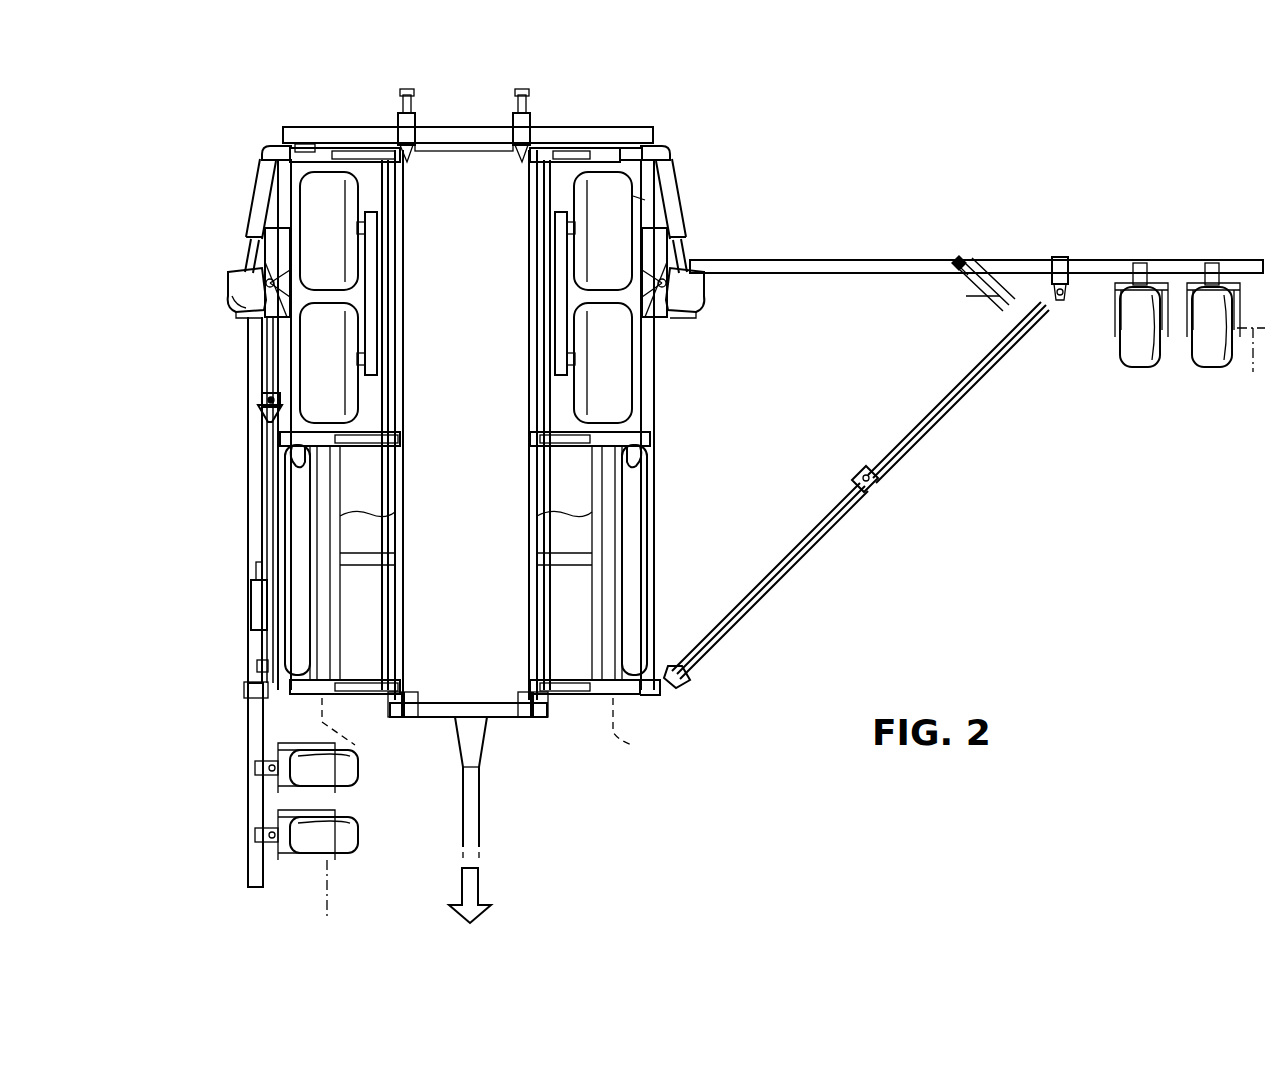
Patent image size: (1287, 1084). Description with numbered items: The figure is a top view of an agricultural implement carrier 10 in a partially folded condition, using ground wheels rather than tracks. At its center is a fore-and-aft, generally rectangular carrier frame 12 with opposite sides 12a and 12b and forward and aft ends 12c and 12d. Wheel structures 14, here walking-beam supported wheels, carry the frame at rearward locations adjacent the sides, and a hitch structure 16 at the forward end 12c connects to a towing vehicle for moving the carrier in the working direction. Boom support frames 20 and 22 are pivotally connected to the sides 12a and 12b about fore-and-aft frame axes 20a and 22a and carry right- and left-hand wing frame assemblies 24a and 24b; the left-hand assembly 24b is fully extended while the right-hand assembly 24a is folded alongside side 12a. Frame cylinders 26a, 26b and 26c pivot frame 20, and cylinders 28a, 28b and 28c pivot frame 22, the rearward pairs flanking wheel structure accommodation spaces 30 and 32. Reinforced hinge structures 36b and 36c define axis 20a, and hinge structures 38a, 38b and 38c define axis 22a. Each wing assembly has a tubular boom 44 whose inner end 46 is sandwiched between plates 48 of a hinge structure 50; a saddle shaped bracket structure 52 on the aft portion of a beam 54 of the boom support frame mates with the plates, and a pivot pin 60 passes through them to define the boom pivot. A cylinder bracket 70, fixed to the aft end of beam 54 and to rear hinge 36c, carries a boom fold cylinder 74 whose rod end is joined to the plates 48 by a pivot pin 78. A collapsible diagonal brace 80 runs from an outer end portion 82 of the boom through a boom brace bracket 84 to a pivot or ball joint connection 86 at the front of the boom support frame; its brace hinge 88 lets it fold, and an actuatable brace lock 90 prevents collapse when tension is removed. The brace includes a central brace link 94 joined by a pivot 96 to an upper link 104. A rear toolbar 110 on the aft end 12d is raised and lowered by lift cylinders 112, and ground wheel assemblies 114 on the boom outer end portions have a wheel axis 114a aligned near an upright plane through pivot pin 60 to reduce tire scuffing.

The agricultural implement carrier 10 is at (172, 160).
The central carrier frame 12 is at (466, 454).
The carrier frame side 12a is at (350, 513).
The carrier frame side 12b is at (560, 513).
The forward end of carrier frame 12c is at (470, 703).
The aft end of carrier frame 12d is at (465, 152).
The wheel structures 14 is at (368, 397).
The hitch structure 16 is at (492, 755).
The boom support frame 20 is at (411, 425).
The frame axis 20a is at (370, 728).
The boom support frame 22 is at (655, 373).
The frame axis 22a is at (645, 730).
The right-hand wing frame assembly 24a is at (218, 655).
The left-hand wing frame assembly 24b is at (877, 240).
The frame cylinder 26a is at (388, 680).
The frame cylinder 26b is at (383, 448).
The frame cylinder 26c is at (378, 162).
The frame cylinder 28a is at (556, 680).
The frame cylinder 28b is at (565, 446).
The frame cylinder 28c is at (557, 162).
The wheel structure accommodation space 30 is at (300, 126).
The wheel structure accommodation space 32 is at (557, 197).
The reinforced hinge structure 36b is at (298, 458).
The reinforced hinge structure 36c is at (310, 146).
The hinge structure 38a is at (630, 695).
The hinge structure 38b is at (640, 434).
The hinge structure 38c is at (628, 146).
The boom 44 is at (258, 410).
The inner end of boom 46 is at (246, 318).
The plates 48 is at (228, 284).
The hinge structure 50 is at (224, 268).
The saddle shaped bracket structure 52 is at (282, 248).
The fore-and-aft extending beam 54 is at (640, 200).
The pivot pin 60 is at (275, 282).
The cylinder bracket 70 is at (266, 147).
The boom fold cylinder 74 is at (258, 186).
The pivot pin 78 is at (232, 300).
The collapsible diagonal brace 80 is at (617, 492).
The outer end portion of boom 82 is at (248, 724).
The boom brace bracket 84 is at (1058, 256).
The pivot or ball joint connection 86 is at (692, 682).
The brace hinge 88 is at (262, 400).
The actuatable brace lock 90 is at (252, 592).
The central brace link 94 is at (770, 562).
The pivot 96 is at (864, 468).
The upper link 104 is at (948, 392).
The rear toolbar 110 is at (460, 127).
The lift cylinders 112 is at (400, 108).
The ground wheel assemblies 114 is at (352, 845).
The wheel axis 114a is at (330, 900).